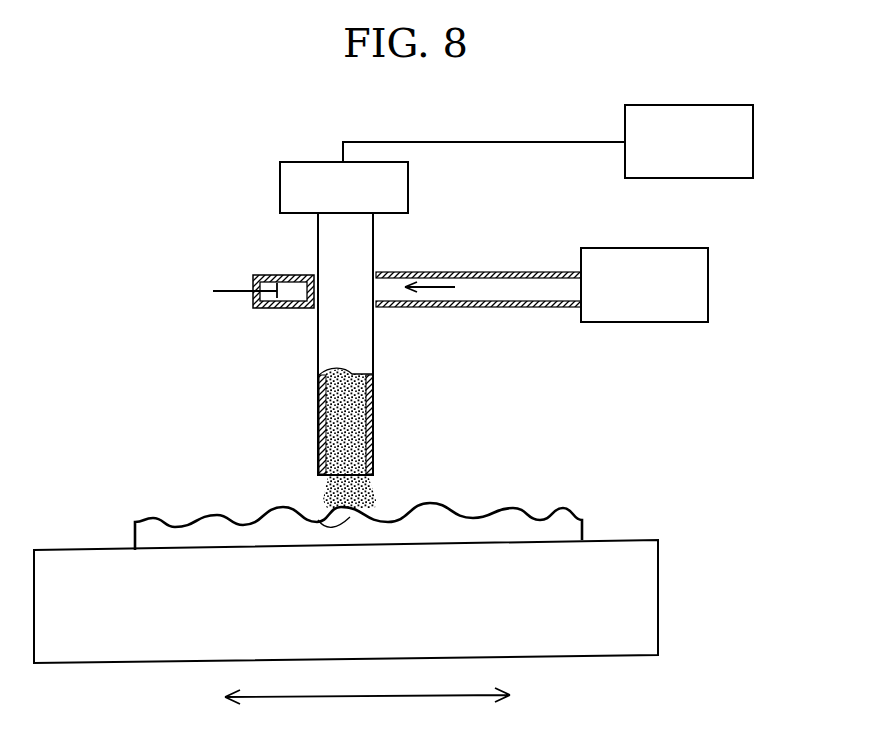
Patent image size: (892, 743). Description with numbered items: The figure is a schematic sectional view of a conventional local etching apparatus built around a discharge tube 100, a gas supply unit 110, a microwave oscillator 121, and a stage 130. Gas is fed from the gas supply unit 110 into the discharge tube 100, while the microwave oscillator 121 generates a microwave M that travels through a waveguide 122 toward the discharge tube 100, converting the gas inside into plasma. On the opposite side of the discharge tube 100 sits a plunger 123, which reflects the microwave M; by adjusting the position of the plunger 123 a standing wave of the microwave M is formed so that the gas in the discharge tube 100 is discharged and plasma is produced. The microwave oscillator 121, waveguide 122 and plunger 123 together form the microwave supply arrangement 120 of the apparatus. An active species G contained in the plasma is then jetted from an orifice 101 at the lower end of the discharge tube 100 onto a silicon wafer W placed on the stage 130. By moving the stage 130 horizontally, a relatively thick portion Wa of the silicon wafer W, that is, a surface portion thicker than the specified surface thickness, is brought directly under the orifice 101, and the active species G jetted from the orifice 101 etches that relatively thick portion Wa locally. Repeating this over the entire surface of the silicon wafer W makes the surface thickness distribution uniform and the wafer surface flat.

The discharge tube 100 is at (355, 253).
The orifice 101 is at (368, 487).
The gas supply unit 110 is at (675, 105).
The abrasive supply unit 120 is at (638, 353).
The microwave oscillator 121 is at (667, 248).
The waveguide 122 is at (475, 268).
The plunger 123 is at (235, 282).
The stage 130 is at (660, 602).
The microwave M is at (437, 305).
The active species G is at (368, 493).
The silicon wafer W is at (547, 532).
The relatively thick portion Wa is at (317, 522).